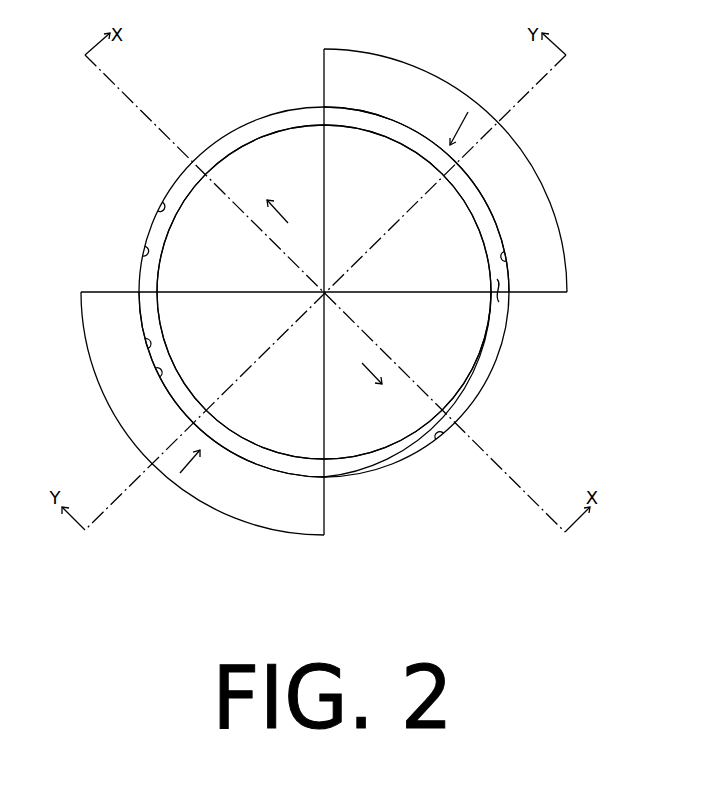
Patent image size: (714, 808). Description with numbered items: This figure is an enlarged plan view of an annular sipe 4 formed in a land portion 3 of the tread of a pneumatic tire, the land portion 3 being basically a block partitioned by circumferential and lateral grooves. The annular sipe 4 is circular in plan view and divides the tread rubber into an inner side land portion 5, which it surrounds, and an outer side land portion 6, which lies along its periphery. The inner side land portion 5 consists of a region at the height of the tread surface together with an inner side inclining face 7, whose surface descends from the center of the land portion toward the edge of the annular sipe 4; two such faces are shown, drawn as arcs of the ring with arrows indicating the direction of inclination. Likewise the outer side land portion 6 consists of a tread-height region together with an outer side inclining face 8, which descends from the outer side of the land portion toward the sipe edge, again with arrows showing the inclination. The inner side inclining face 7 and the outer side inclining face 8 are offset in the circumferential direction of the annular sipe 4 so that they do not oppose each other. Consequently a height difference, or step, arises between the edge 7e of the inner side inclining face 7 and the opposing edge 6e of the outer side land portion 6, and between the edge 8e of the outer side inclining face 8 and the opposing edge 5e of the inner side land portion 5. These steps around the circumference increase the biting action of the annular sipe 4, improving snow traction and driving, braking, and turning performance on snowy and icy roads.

The land portion 3 is at (190, 82).
The annular sipe 4 is at (253, 132).
The inner side land portion 5 is at (273, 445).
The outer side land portion 6 is at (273, 95).
The inner side inclining face 7 is at (307, 143).
The outer side inclining face 8 is at (535, 212).
The edge of inner side land portion 5e is at (177, 363).
The edge of outer side land portion 6e is at (143, 248).
The edge of inner side inclining face 7e is at (160, 207).
The edge of outer side inclining face 8e is at (143, 343).